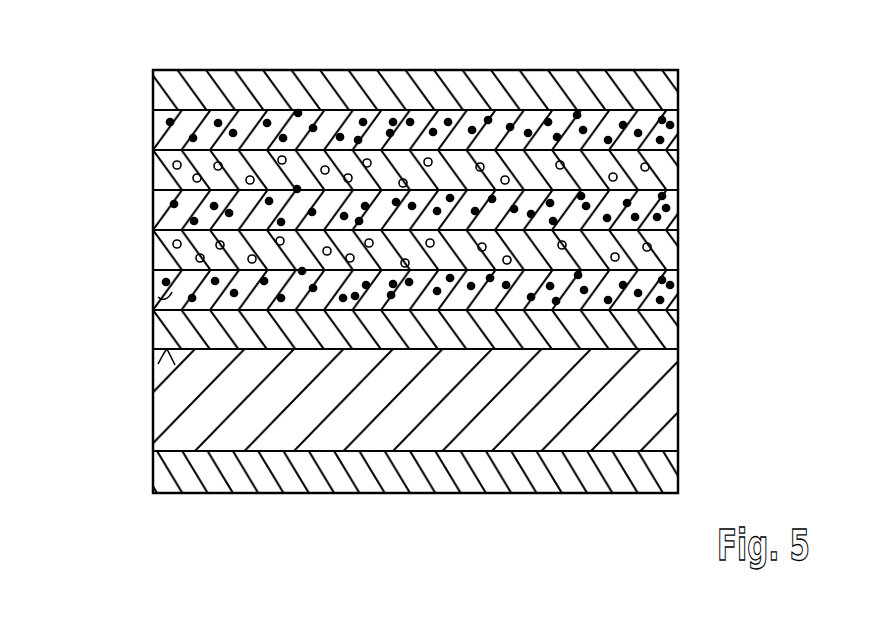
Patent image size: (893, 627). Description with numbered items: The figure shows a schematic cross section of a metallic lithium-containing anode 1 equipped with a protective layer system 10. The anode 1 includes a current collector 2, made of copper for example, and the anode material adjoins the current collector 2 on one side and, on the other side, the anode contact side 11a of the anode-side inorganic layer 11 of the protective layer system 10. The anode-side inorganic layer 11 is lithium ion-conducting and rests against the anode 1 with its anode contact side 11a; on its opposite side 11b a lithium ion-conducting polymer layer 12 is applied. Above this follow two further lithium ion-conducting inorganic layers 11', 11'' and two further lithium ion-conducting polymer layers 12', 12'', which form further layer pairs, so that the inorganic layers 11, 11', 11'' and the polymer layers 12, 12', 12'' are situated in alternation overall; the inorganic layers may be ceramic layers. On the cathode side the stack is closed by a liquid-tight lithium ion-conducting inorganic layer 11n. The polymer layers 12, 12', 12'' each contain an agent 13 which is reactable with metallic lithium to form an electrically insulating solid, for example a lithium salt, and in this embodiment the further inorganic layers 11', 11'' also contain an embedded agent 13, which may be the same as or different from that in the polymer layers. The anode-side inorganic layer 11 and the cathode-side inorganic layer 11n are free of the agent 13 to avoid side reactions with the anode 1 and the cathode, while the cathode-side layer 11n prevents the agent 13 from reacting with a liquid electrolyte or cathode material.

The protective layer system 10 is at (86, 180).
The cathode-side inorganic layer 11n is at (668, 95).
The further polymer layer 12'' is at (451, 130).
The further inorganic layer 11'' is at (450, 170).
The further polymer layer 12' is at (448, 210).
The further inorganic layer 11' is at (447, 250).
The polymer layer 12 is at (446, 290).
The anode-side inorganic layer 11 is at (445, 329).
The anode contact side 11a is at (158, 363).
The side opposite from anode contact side 11b is at (158, 297).
The agent 13 is at (318, 125).
The anode 1 is at (668, 400).
The current collector 2 is at (668, 477).